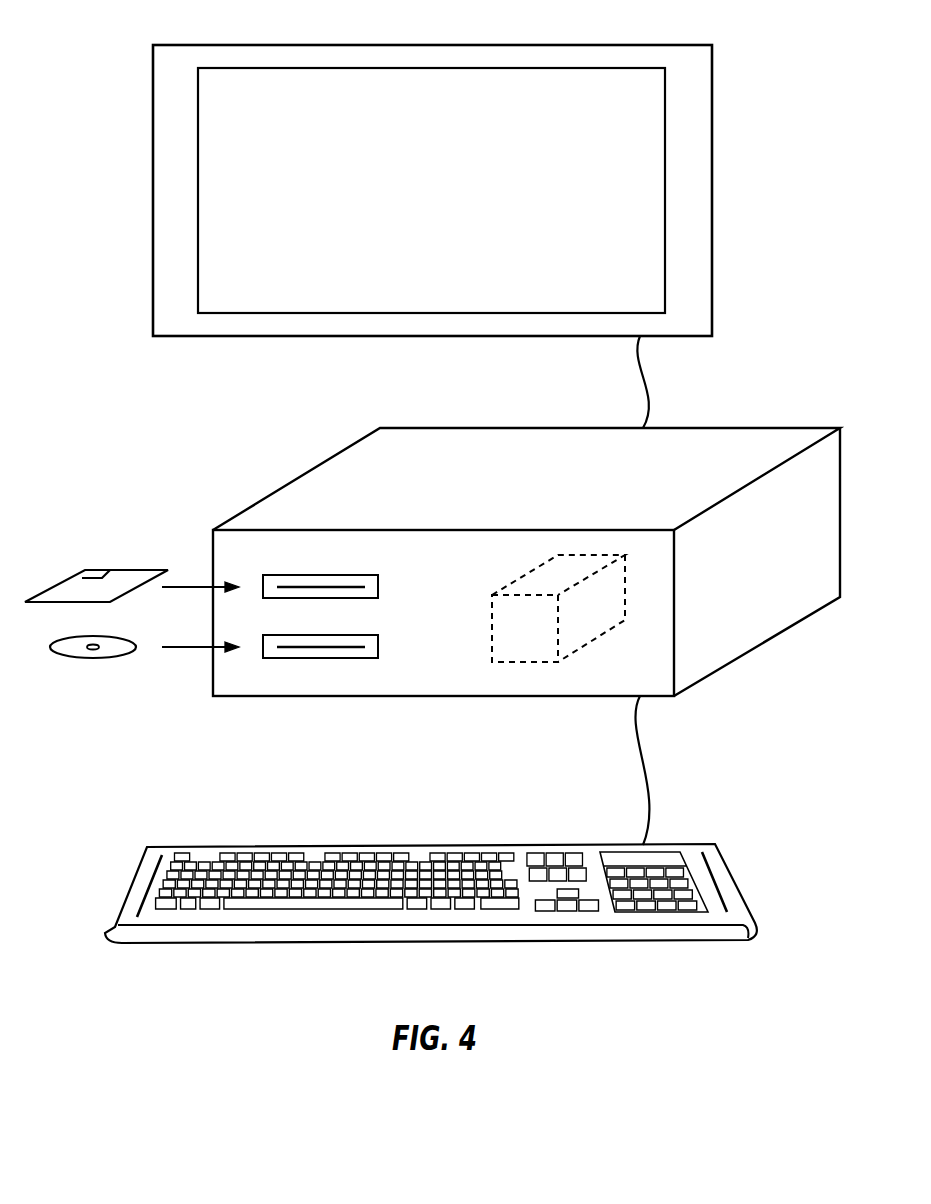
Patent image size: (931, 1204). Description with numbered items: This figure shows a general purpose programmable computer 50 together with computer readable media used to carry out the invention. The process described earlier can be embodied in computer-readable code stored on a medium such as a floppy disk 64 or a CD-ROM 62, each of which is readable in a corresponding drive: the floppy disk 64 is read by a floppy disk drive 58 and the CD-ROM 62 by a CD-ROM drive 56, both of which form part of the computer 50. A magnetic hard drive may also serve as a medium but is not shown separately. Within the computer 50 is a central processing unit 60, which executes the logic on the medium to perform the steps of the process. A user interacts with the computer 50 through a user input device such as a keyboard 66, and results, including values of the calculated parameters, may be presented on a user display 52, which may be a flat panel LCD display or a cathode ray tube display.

The general purpose programmable computer 50 is at (526, 544).
The user display 52 is at (630, 45).
The CD-ROM drive 56 is at (348, 635).
The floppy disk drive 58 is at (348, 575).
The central processing unit 60 is at (583, 645).
The CD-ROM 62 is at (117, 633).
The floppy disk 64 is at (123, 570).
The keyboard 66 is at (213, 845).